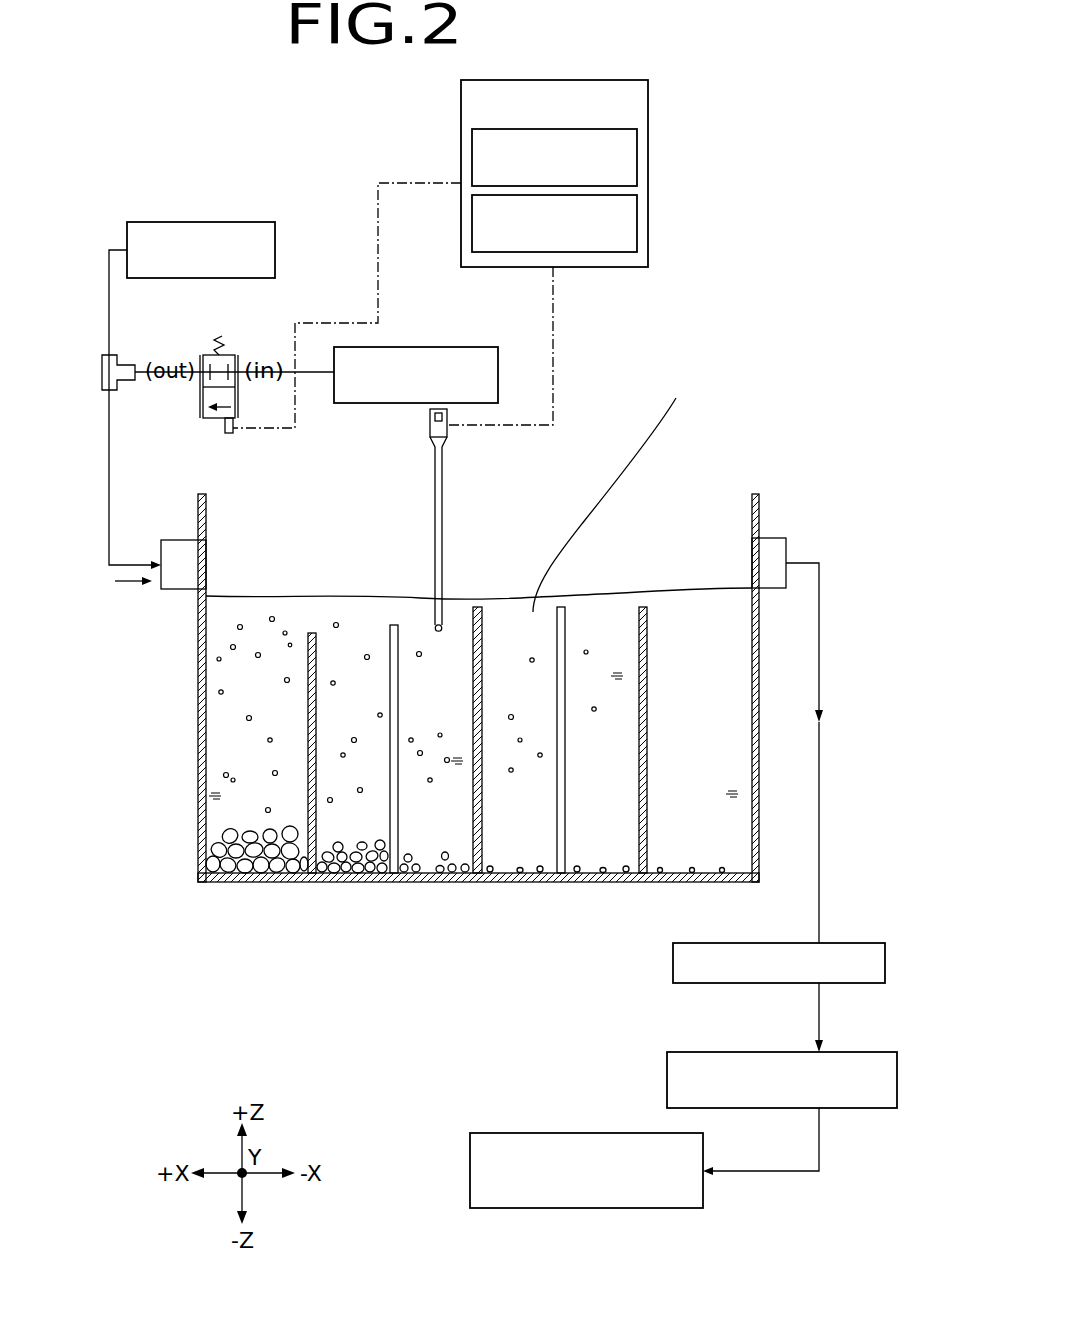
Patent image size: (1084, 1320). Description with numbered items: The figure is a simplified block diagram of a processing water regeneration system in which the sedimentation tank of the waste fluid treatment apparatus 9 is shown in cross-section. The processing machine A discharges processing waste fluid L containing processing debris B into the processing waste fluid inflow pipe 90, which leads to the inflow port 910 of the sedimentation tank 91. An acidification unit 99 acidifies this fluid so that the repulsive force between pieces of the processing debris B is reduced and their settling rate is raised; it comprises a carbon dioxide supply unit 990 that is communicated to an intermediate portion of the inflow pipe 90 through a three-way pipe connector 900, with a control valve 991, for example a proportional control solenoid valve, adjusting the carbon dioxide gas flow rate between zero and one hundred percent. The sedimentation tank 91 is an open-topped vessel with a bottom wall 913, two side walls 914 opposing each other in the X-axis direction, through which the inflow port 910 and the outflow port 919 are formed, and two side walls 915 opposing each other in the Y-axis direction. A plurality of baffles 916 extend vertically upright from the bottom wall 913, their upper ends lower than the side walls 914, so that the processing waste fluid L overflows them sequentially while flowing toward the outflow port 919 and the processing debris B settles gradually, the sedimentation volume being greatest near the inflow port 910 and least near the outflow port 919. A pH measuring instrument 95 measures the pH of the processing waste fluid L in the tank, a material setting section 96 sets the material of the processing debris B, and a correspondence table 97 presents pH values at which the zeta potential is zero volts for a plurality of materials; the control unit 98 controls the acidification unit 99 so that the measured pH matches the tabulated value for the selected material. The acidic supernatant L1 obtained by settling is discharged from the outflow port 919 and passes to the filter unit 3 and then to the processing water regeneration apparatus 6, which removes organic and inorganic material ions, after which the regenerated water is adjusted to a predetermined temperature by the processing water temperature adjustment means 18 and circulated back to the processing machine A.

The control unit 98 is at (594, 173).
The material setting section 96 is at (637, 172).
The correspondence table 97 is at (637, 237).
The acidification unit 99 is at (428, 329).
The carbon dioxide supply unit 990 is at (462, 347).
The control valve 991 is at (228, 437).
The three-way pipe connector 900 is at (122, 362).
The processing waste fluid inflow pipe 90 is at (110, 425).
The inflow port 910 is at (182, 545).
The pH measuring instrument 95 is at (440, 440).
The sedimentation tank 91 is at (498, 666).
The side wall 915 is at (663, 515).
The side wall 914 is at (198, 780).
The outflow port 919 is at (780, 548).
The baffle 916 is at (394, 625).
The bottom wall 913 is at (447, 883).
The waste fluid treatment apparatus 9 is at (498, 706).
The filter unit 3 is at (673, 967).
The processing water regeneration apparatus 6 is at (667, 1075).
The processing water temperature adjustment means 18 is at (470, 1172).
The processing machine A is at (200, 222).
The processing debris B is at (233, 880).
The processing waste fluid L is at (120, 586).
The acidic supernatant L1 is at (691, 380).